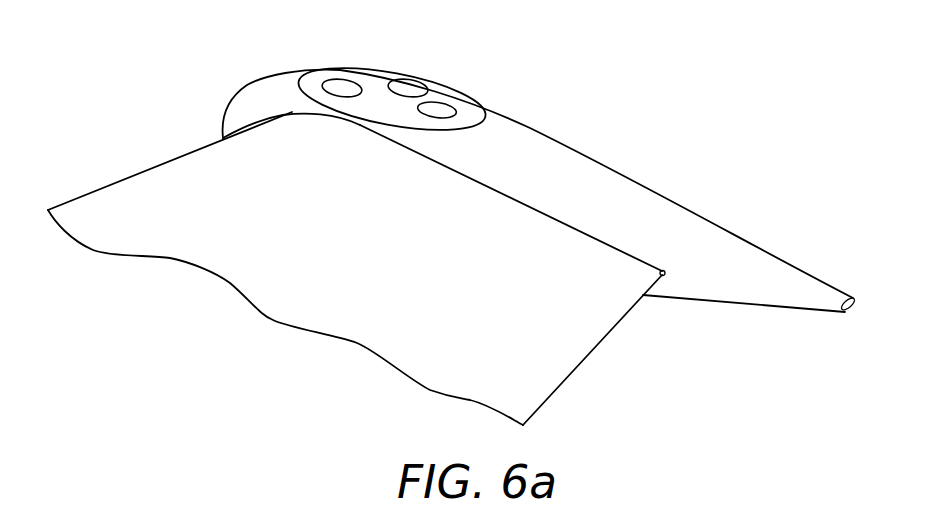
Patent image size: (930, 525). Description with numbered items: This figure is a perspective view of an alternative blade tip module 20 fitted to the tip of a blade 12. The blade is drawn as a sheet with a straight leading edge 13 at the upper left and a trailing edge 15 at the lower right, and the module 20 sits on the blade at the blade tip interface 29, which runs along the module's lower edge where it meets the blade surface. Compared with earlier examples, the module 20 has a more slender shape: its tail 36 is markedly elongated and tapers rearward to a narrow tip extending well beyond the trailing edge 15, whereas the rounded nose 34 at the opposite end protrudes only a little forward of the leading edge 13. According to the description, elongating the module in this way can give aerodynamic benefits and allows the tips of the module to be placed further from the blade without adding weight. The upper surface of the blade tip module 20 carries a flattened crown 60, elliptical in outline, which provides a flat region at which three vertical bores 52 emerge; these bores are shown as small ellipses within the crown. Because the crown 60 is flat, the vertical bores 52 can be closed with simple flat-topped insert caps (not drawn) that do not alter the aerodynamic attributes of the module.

The panel 12 is at (558, 368).
The leading edge 13 is at (160, 164).
The trailing edge 15 is at (622, 318).
The blade tip module 20 is at (558, 131).
The blade tip interface 29 is at (575, 228).
The nose 34 is at (224, 112).
The tail 36 is at (853, 308).
The vertical bores 52 is at (437, 107).
The flattened crown 60 is at (473, 113).